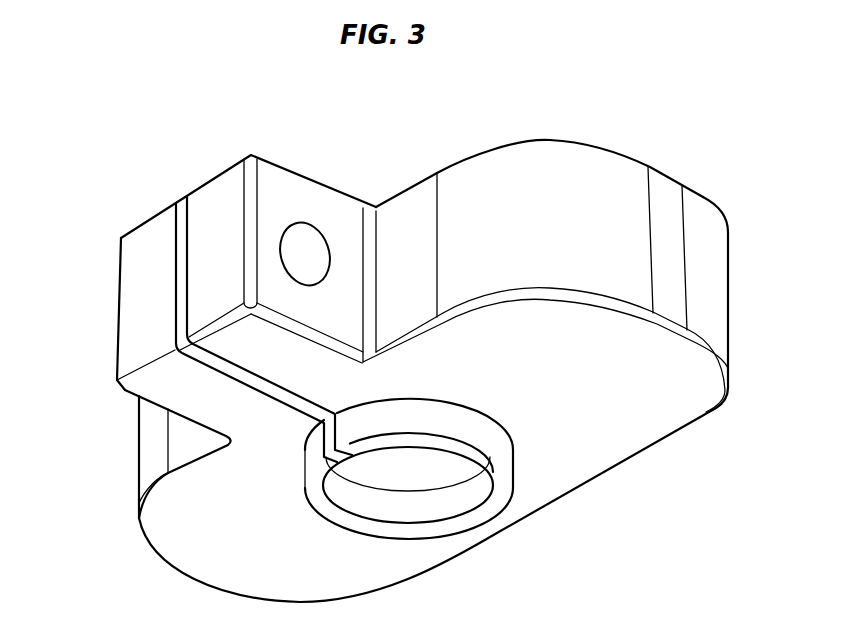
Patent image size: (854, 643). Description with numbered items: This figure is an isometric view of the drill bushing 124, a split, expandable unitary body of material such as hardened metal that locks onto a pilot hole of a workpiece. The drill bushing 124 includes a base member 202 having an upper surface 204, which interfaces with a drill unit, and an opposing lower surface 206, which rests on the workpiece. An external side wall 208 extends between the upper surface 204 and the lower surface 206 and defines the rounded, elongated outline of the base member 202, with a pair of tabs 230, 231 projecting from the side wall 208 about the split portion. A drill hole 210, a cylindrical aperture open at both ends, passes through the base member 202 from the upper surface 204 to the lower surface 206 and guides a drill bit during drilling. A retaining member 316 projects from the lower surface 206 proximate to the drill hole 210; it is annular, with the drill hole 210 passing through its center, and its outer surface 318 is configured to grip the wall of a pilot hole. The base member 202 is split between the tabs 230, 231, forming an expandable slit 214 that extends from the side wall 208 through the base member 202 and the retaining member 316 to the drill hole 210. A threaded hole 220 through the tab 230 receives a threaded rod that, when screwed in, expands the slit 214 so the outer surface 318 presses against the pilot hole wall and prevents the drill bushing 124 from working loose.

The drill bushing 124 is at (601, 92).
The base member 202 is at (602, 183).
The upper surface 204 is at (485, 138).
The lower surface 206 is at (197, 548).
The external side wall 208 is at (700, 258).
The drill hole 210 is at (432, 481).
The slit 214 is at (182, 222).
The threaded hole 220 is at (316, 256).
The tab 230 is at (216, 190).
The tab 231 is at (138, 315).
The retaining member 316 is at (364, 530).
The outer surface 318 is at (494, 431).